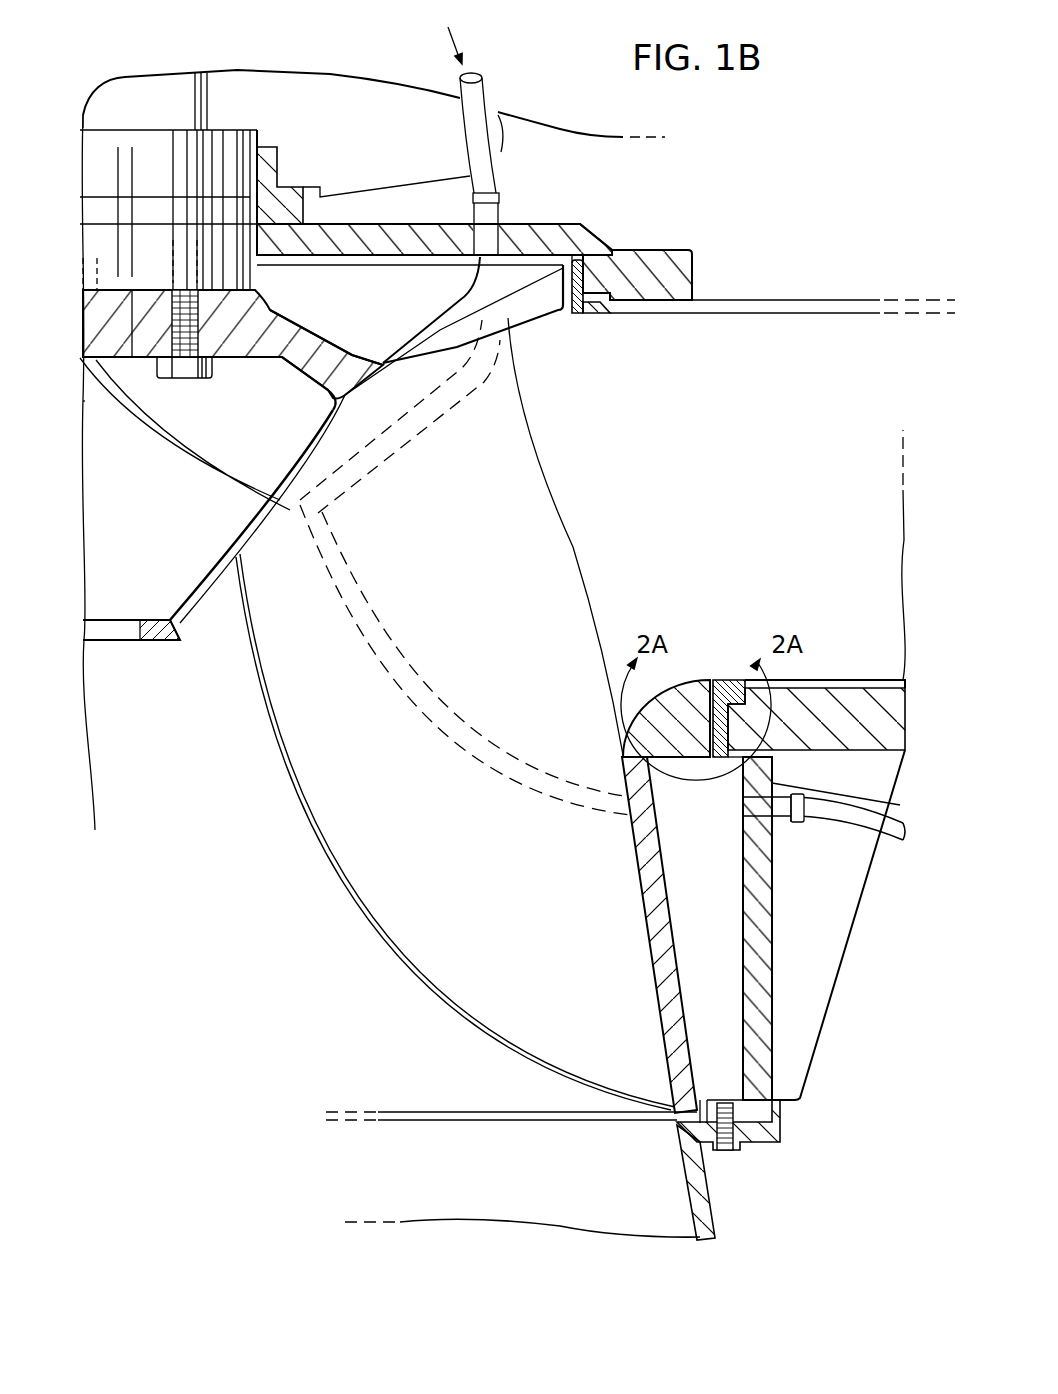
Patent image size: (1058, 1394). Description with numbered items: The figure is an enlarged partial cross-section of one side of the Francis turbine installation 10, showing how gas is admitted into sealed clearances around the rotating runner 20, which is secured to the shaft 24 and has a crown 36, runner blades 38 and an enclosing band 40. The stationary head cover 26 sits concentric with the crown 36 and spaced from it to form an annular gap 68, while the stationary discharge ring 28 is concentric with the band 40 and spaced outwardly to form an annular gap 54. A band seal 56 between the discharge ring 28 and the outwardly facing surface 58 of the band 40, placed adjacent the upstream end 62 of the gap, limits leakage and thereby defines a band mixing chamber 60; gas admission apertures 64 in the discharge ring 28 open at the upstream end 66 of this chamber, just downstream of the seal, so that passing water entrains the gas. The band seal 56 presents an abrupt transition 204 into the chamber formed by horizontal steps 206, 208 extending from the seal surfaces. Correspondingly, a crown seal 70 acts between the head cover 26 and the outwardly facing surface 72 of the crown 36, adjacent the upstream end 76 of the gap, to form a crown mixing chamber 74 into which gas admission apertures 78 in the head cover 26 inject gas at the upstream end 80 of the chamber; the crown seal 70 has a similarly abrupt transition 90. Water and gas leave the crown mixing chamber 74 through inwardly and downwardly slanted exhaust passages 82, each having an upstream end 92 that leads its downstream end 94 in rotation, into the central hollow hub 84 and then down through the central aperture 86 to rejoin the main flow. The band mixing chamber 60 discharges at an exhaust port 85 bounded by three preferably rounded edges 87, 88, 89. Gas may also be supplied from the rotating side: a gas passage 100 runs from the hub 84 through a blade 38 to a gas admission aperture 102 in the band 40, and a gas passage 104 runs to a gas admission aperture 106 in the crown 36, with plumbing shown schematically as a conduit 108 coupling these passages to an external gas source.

The hydroelectric turbine installation 10 is at (642, 201).
The runner 20 is at (208, 630).
The shaft 24 is at (212, 110).
The head cover 26 is at (688, 252).
The discharge ring 28 is at (773, 1012).
The crown 36 is at (262, 528).
The runner blade 38 is at (495, 1027).
The band 40 is at (640, 910).
The annular gap 54 is at (690, 914).
The band seal 56 is at (700, 663).
The outwardly facing surface 58 is at (730, 703).
The band mixing chamber 60 is at (671, 870).
The upstream end 62 is at (715, 678).
The gas admission aperture 64 is at (742, 808).
The upstream end 66 is at (677, 804).
The annular gap 68 is at (420, 293).
The crown seal 70 is at (568, 324).
The outwardly facing surface 72 is at (591, 314).
The crown mixing chamber 74 is at (422, 321).
The upstream end 76 is at (550, 255).
The gas admission aperture 78 is at (470, 288).
The upstream end 80 is at (490, 293).
The exhaust passage 82 is at (316, 316).
The central hollow hub 84 is at (157, 480).
The exhaust port 85 is at (670, 1120).
The central aperture 86 is at (124, 617).
The edge 87 is at (699, 1093).
The edge 88 is at (713, 1103).
The edge 89 is at (687, 1130).
The abrupt transition 90 is at (580, 257).
The upstream end 92 is at (297, 327).
The downstream end 94 is at (280, 368).
The gas passage 100 is at (420, 655).
The gas admission aperture 102 is at (638, 852).
The gas passage 104 is at (417, 425).
The gas admission aperture 106 is at (484, 346).
The conduit 108 is at (208, 445).
The abrupt transition 204 is at (943, 870).
The horizontal step 206 is at (637, 760).
The horizontal step 208 is at (775, 767).